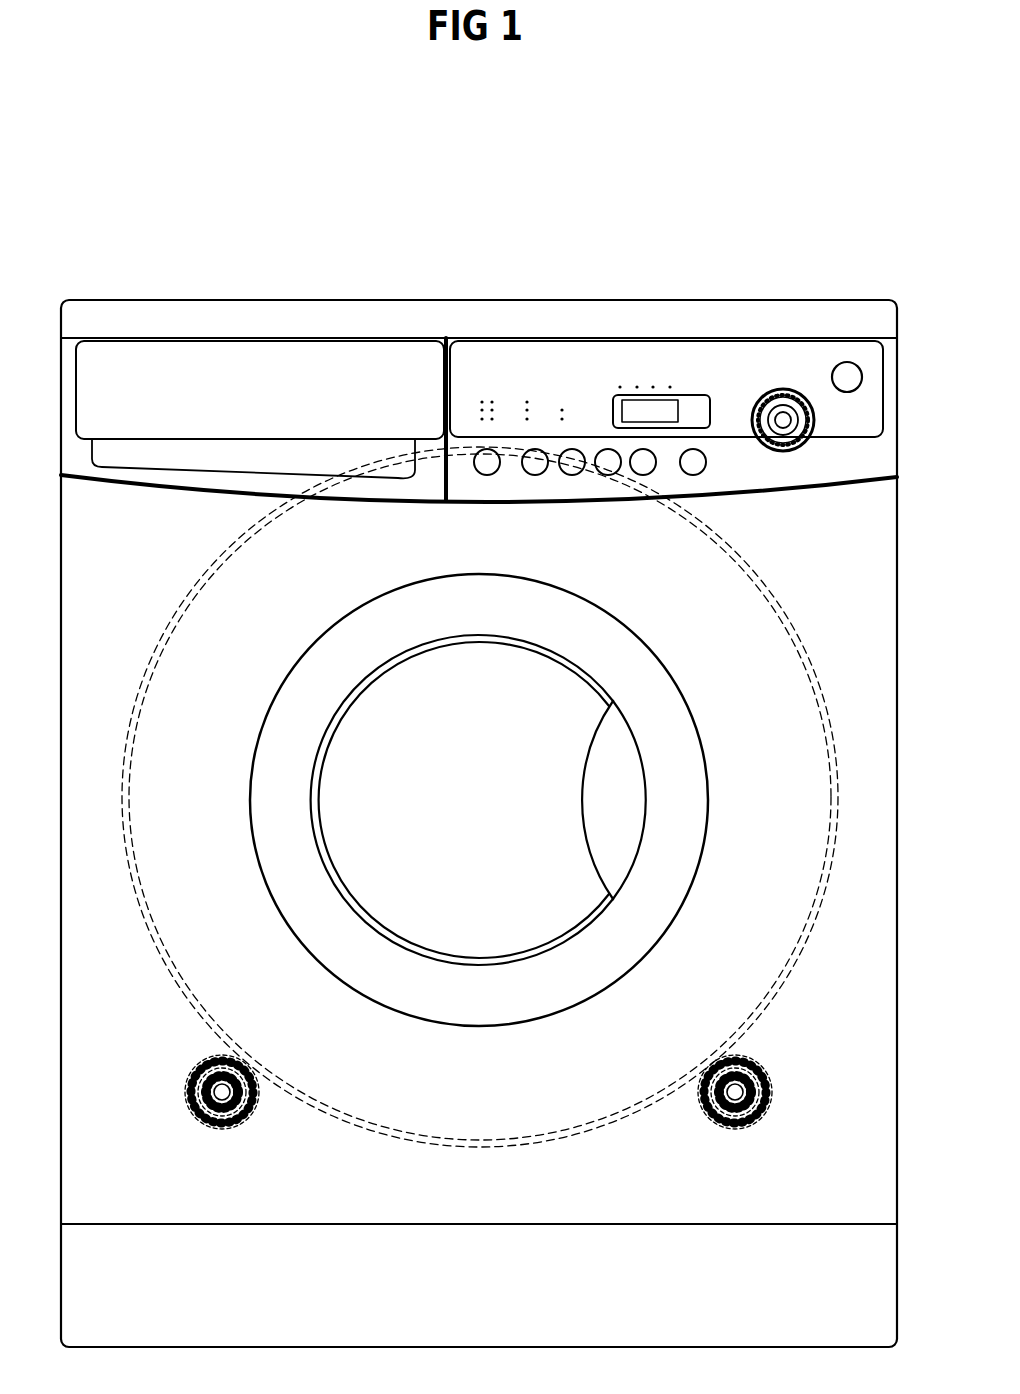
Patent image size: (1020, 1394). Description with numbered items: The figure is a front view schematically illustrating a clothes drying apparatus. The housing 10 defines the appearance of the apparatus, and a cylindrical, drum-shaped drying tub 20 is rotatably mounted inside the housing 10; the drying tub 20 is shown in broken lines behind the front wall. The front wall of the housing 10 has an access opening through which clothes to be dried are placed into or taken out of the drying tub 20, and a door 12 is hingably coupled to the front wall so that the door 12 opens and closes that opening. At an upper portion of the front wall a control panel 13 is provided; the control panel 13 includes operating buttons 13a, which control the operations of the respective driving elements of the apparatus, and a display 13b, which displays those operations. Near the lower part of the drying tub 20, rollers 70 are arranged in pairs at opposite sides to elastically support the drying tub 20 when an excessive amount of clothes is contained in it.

The housing 10 is at (769, 283).
The door 12 is at (338, 798).
The control panel 13 is at (553, 358).
The operating buttons 13a is at (651, 471).
The display 13b is at (653, 412).
The drying tub 20 is at (182, 608).
The rollers 70 is at (195, 1115).